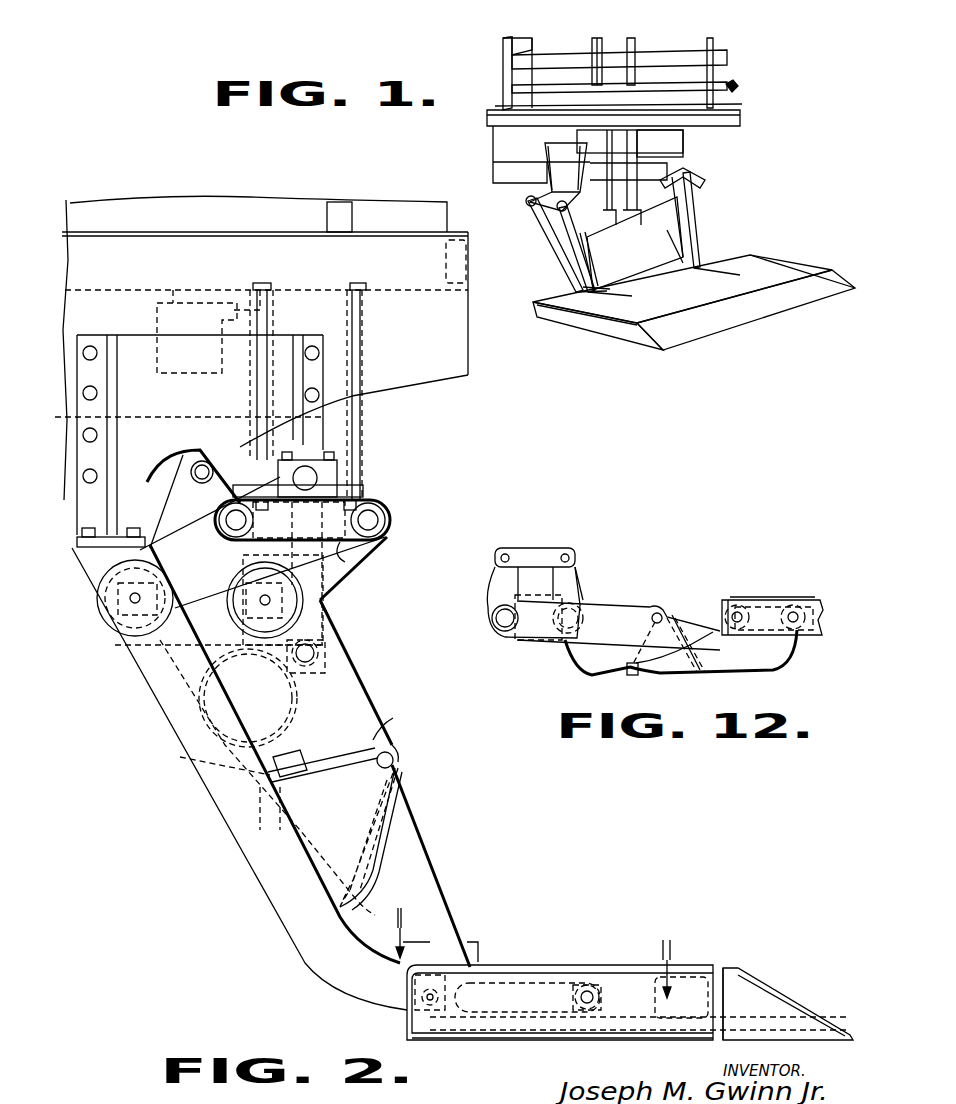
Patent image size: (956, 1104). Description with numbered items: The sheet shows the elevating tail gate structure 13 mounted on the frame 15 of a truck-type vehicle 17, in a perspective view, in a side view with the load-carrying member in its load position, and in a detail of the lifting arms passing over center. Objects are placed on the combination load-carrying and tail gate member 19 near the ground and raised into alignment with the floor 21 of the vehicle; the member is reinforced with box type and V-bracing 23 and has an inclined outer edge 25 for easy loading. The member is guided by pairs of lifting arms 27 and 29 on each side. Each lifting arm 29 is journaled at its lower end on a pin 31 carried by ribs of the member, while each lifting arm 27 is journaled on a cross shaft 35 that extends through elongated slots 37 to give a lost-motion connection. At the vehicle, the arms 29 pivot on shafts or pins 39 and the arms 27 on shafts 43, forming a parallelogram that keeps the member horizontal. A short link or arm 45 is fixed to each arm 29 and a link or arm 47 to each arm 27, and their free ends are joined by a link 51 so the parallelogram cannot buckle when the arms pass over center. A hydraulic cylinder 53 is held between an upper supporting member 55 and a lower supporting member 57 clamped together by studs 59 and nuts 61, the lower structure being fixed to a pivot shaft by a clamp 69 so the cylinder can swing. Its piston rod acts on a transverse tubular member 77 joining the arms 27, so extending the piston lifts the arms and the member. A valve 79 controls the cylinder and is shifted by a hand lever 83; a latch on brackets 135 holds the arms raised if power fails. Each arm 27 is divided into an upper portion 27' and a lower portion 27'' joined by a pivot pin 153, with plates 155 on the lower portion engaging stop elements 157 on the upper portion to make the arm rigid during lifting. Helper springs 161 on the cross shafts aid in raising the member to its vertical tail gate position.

In FIG. 1, the elevating tail gate structure 13 is at (545, 267).
In FIG. 1, the vehicle frame 15 is at (493, 148).
In FIG. 2, the vehicle frame 15 is at (445, 330).
In FIG. 1, the vehicle 17 is at (478, 110).
In FIG. 1, the combination load-carrying and tail gate member 19 is at (602, 327).
In FIG. 12, the combination load-carrying and tail gate member 19 is at (785, 594).
In FIG. 2, the combination load-carrying and tail gate member 19 is at (570, 967).
In FIG. 1, the floor 21 is at (700, 108).
In FIG. 1, the box type and V-bracing 23 is at (627, 332).
In FIG. 2, the box type and V-bracing 23 is at (640, 1032).
In FIG. 1, the inclined outer edge 25 is at (697, 332).
In FIG. 2, the inclined outer edge 25 is at (790, 1000).
In FIG. 1, the lifting arm 27 is at (617, 234).
In FIG. 2, the lifting arm 27 is at (405, 866).
In FIG. 2, the upper lifting arm portion 27' is at (357, 672).
In FIG. 2, the lower lifting arm portion 27'' is at (428, 829).
In FIG. 1, the lifting arm 29 is at (563, 230).
In FIG. 12, the lifting arm 29 is at (602, 623).
In FIG. 2, the lifting arm 29 is at (222, 812).
In FIG. 12, the pin 31 is at (740, 607).
In FIG. 2, the pin 31 is at (410, 1017).
In FIG. 12, the cross shaft 35 is at (820, 615).
In FIG. 2, the cross shaft 35 is at (595, 1000).
In FIG. 12, the elongated slot 37 is at (758, 607).
In FIG. 2, the elongated slot 37 is at (520, 967).
In FIG. 2, the shaft or pin 39 is at (110, 630).
In FIG. 2, the shaft 43 is at (320, 592).
In FIG. 1, the short link or arm 45 is at (547, 187).
In FIG. 12, the short link or arm 45 is at (502, 586).
In FIG. 2, the short link or arm 45 is at (205, 574).
In FIG. 1, the link or arm 47 is at (568, 202).
In FIG. 12, the link or arm 47 is at (573, 580).
In FIG. 2, the link or arm 47 is at (365, 553).
In FIG. 12, the link 51 is at (538, 553).
In FIG. 2, the link 51 is at (348, 575).
In FIG. 1, the hydraulic cylinder 53 is at (630, 138).
In FIG. 2, the hydraulic cylinder 53 is at (345, 420).
In FIG. 2, the upper supporting member 55 is at (360, 318).
In FIG. 2, the lower supporting member 57 is at (367, 478).
In FIG. 2, the stud 59 is at (352, 443).
In FIG. 2, the nut 61 is at (360, 288).
In FIG. 2, the clamp 69 is at (300, 465).
In FIG. 2, the tubular member 77 is at (185, 757).
In FIG. 2, the valve 79 is at (185, 372).
In FIG. 1, the hand lever 83 is at (733, 88).
In FIG. 2, the bracket 135 is at (172, 495).
In FIG. 12, the pivot pin 153 is at (658, 613).
In FIG. 2, the pivot pin 153 is at (395, 757).
In FIG. 1, the plate 155 is at (580, 258).
In FIG. 12, the plate 155 is at (672, 613).
In FIG. 2, the plate 155 is at (375, 735).
In FIG. 12, the stop element 157 is at (626, 668).
In FIG. 2, the stop element 157 is at (310, 755).
In FIG. 2, the helper spring 161 is at (592, 1012).